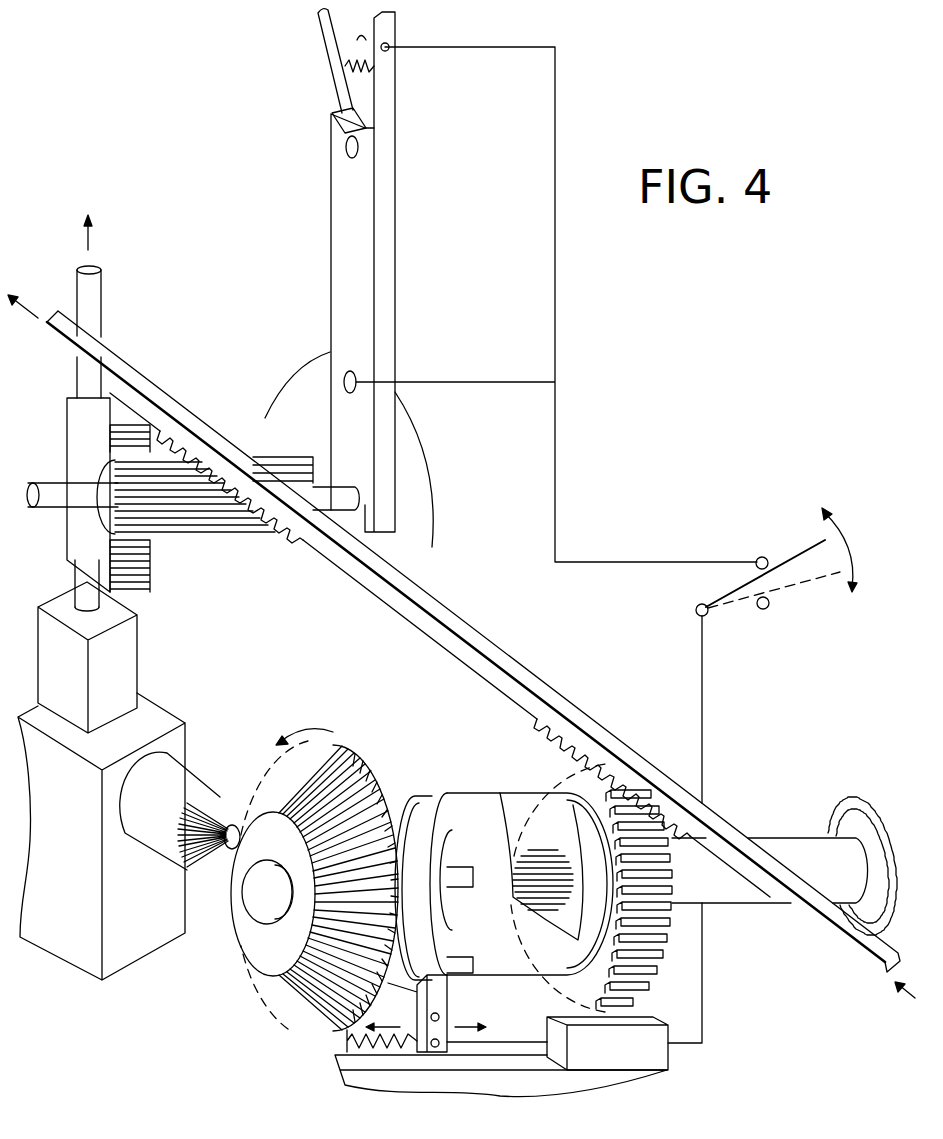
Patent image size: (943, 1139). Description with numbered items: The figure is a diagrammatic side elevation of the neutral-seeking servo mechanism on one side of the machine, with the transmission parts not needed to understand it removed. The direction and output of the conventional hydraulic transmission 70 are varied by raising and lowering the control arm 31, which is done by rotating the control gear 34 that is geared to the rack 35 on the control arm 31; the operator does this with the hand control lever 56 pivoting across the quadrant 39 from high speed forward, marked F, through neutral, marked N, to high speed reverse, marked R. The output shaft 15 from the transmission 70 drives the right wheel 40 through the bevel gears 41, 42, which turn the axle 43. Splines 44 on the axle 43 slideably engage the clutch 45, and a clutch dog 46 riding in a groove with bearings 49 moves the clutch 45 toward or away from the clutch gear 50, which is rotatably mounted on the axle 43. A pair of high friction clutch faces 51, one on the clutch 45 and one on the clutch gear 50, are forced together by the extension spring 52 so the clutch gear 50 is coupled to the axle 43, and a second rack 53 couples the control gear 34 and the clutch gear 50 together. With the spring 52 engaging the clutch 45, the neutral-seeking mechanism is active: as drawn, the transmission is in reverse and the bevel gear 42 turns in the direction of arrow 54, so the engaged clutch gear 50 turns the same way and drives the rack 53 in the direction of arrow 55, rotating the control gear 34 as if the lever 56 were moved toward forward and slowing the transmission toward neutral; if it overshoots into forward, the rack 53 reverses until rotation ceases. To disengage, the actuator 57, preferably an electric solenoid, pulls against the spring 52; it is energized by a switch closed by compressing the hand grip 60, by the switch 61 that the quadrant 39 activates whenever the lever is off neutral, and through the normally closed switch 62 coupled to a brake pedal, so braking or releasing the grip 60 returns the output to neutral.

The output shaft 15 is at (180, 783).
The control arm 31 is at (102, 303).
The control gear 34 is at (227, 513).
The rack 35 is at (75, 433).
The quadrant 39 is at (425, 447).
The right wheel 40 is at (860, 796).
The bevel gear 41 is at (233, 818).
The bevel gear 42 is at (352, 762).
The axle 43 is at (728, 882).
The splines 44 is at (535, 883).
The clutch 45 is at (448, 1013).
The clutch dog 46 is at (440, 1000).
The bearings 49 is at (408, 802).
The clutch gear 50 is at (652, 950).
The clutch faces 51 is at (572, 820).
The extension spring 52 is at (345, 1042).
The second rack 53 is at (835, 950).
The arrow 54 is at (308, 727).
The arrow 55 is at (906, 1000).
The hand control lever 56 is at (330, 200).
The actuator 57 is at (655, 1053).
The hand grip 60 is at (327, 58).
The switch 61 is at (343, 380).
The normally closed switch 62 is at (762, 775).
The hydraulic transmission 70 is at (155, 925).